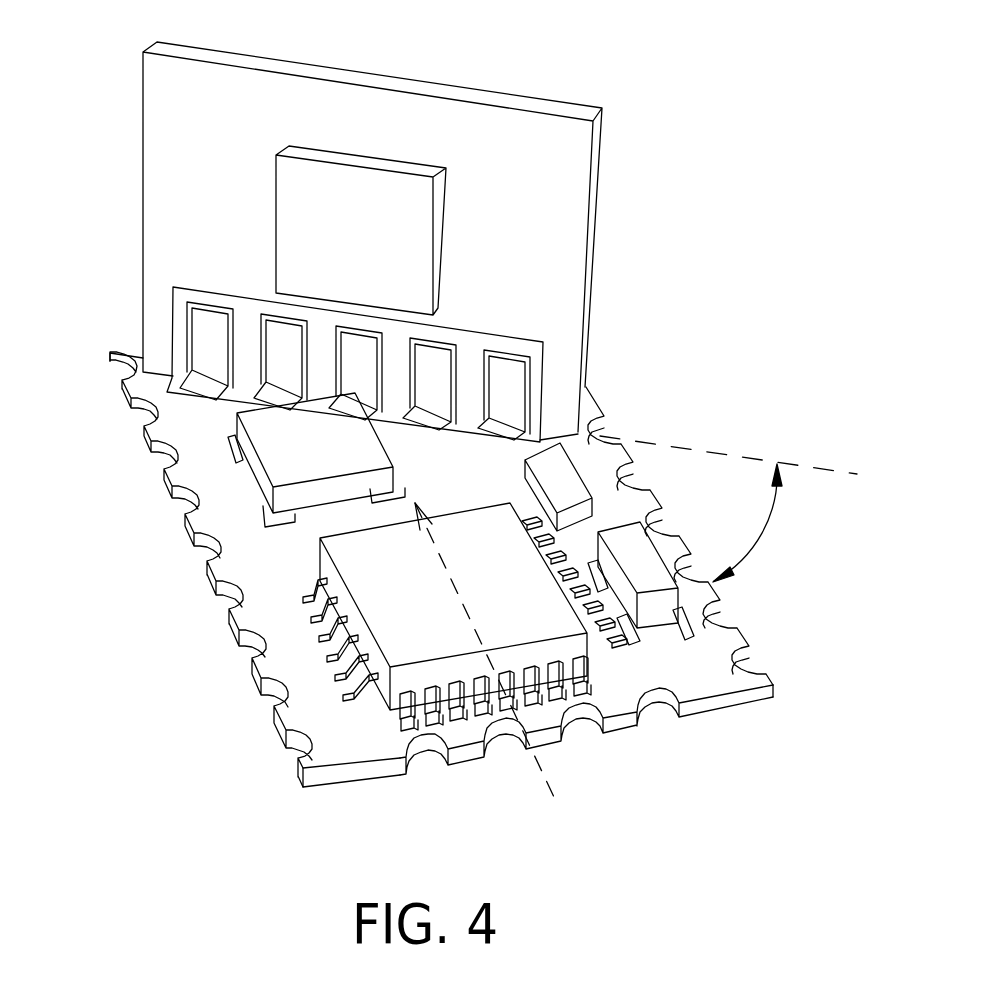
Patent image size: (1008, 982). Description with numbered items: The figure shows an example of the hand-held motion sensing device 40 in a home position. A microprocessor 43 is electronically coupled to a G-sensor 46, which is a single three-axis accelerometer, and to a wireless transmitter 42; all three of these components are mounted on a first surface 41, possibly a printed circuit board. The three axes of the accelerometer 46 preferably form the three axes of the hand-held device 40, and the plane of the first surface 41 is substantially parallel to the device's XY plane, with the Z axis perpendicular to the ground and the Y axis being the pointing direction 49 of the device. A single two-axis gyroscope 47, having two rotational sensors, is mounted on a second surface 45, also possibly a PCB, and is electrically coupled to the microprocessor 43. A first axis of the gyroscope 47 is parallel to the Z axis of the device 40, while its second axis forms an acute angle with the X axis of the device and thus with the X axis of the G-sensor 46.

The hand-held device 40 is at (705, 57).
The first surface 41 is at (697, 658).
The wireless transmitter 42 is at (560, 474).
The microprocessor 43 is at (388, 558).
The second surface 45 is at (188, 137).
The G-sensor 46 is at (288, 445).
The 2-axis gyroscope 47 is at (345, 187).
The pointing direction 49 is at (556, 801).